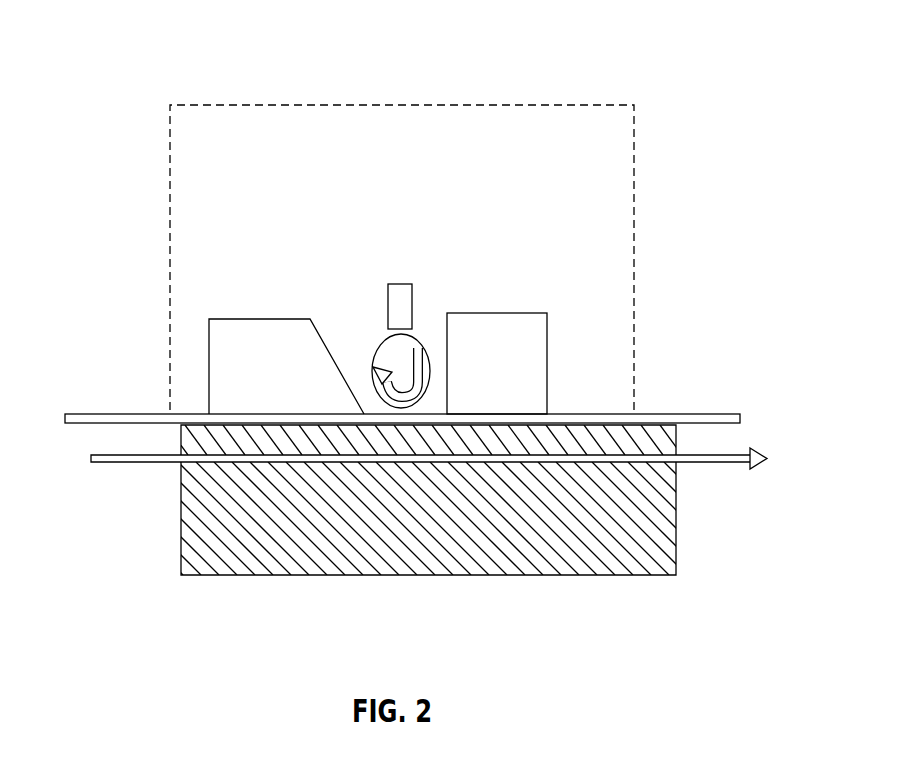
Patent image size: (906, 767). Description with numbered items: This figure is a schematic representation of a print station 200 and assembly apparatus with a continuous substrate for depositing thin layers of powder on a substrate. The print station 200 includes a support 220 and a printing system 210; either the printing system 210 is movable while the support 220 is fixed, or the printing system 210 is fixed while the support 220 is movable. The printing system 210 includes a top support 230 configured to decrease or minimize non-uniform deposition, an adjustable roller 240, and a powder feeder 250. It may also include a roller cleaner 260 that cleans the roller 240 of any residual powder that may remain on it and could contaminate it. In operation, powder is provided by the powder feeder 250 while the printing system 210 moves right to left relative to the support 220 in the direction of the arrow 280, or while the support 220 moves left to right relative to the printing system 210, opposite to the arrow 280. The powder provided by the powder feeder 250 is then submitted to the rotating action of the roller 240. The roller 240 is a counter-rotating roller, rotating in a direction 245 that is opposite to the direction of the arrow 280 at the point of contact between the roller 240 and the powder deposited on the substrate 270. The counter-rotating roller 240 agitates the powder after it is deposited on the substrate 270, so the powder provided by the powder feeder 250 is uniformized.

The print station 200 is at (135, 48).
The printing system 210 is at (655, 185).
The support 220 is at (440, 532).
The top support 230 is at (512, 330).
The roller 240 is at (422, 348).
The direction 245 is at (372, 368).
The powder feeder 250 is at (382, 352).
The roller cleaner 260 is at (400, 283).
The substrate 270 is at (724, 405).
The arrow 280 is at (693, 477).